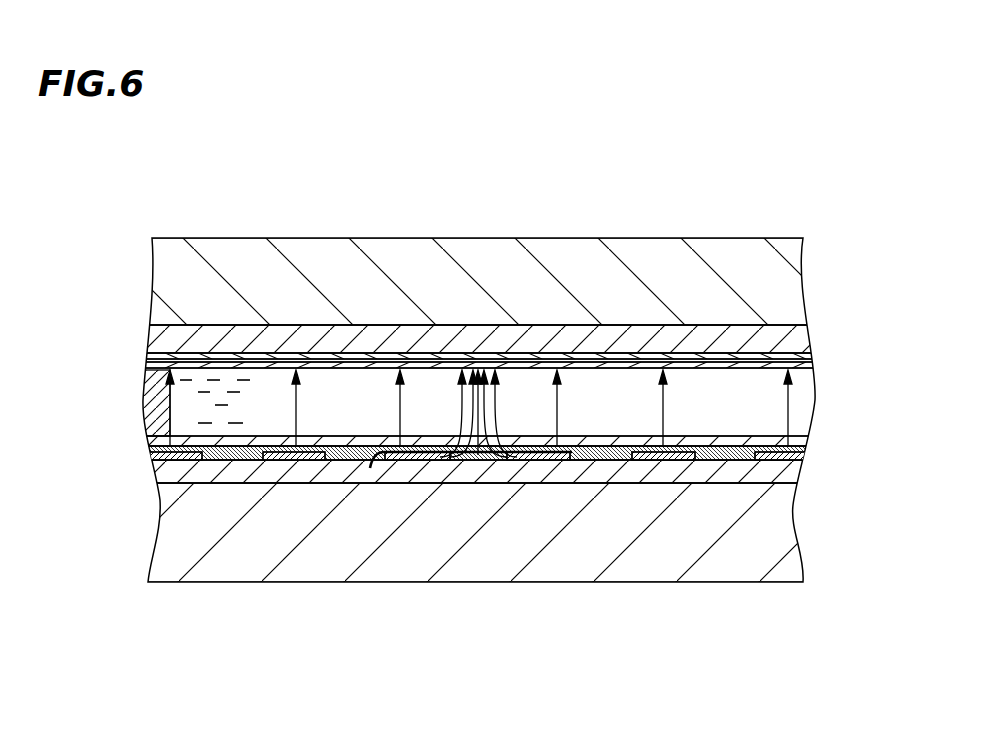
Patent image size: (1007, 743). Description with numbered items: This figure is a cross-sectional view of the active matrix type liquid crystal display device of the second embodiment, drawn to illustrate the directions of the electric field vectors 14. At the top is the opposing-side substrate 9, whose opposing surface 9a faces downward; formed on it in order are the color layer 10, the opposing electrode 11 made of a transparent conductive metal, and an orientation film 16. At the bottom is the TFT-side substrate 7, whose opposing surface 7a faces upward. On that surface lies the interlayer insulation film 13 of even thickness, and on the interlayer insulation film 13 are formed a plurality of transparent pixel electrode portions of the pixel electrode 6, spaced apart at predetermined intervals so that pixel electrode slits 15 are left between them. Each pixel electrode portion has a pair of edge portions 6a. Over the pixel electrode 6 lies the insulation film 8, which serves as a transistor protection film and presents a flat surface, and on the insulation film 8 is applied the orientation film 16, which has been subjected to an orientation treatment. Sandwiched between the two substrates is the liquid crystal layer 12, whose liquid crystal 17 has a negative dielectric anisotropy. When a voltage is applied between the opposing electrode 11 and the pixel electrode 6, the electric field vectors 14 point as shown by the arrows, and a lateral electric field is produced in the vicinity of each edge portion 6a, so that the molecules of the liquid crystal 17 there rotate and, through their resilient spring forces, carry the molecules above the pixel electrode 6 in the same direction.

The pixel electrode 6 is at (532, 453).
The edge portion 6a is at (370, 460).
The TFT-side substrate 7 is at (222, 560).
The opposing surface 7a is at (803, 466).
The insulation film 8 is at (610, 453).
The opposing-side substrate 9 is at (230, 238).
The opposing surface 9a is at (772, 326).
The color layer 10 is at (352, 238).
The opposing electrode 11 is at (528, 357).
The liquid crystal layer 12 is at (710, 387).
The interlayer insulation film 13 is at (485, 478).
The electric field vectors 14 is at (403, 403).
The pixel electrode slits 15 is at (338, 463).
The orientation film 16 is at (633, 367).
The liquid crystal 17 is at (160, 400).